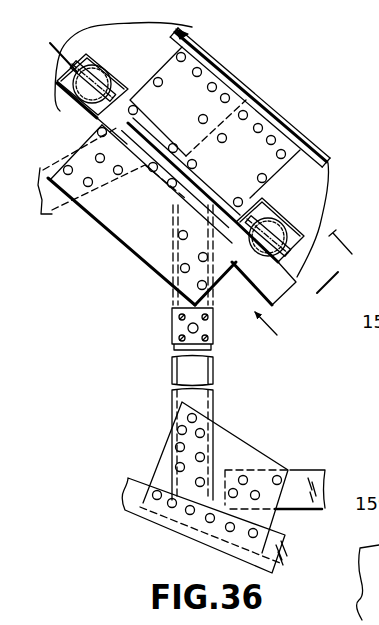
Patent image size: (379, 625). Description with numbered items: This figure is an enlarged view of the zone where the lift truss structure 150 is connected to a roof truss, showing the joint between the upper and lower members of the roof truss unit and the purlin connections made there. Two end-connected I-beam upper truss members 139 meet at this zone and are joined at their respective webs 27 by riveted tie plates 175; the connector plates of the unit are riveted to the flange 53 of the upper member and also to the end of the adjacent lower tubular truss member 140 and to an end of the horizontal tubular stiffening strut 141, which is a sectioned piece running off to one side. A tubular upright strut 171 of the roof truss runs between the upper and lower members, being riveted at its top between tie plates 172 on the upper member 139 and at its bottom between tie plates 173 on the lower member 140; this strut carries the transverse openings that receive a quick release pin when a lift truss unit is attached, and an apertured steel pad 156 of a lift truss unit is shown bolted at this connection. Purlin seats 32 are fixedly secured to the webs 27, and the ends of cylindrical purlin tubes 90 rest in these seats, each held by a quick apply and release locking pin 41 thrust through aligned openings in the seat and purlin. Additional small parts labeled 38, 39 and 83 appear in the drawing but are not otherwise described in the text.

The web 27 is at (310, 165).
The purlin seat 32 is at (124, 72).
The strut 38 is at (63, 27).
The strut 39 is at (350, 243).
The quick apply and release locking pin 41 is at (80, 107).
The flange 53 is at (281, 303).
The mounting plate 83 is at (257, 98).
The purlin tube 90 is at (95, 64).
The upper truss member 139 is at (218, 50).
The lower tubular truss member 140 is at (283, 560).
The horizontal tubular stiffening strut 141 is at (312, 478).
The lift truss structure 150 is at (170, 343).
The apertured steel pad 156 is at (175, 327).
The tubular upright strut 171 is at (215, 375).
The tie plate 172 is at (143, 253).
The tie plate 173 is at (228, 437).
The riveted tie plate 175 is at (268, 133).